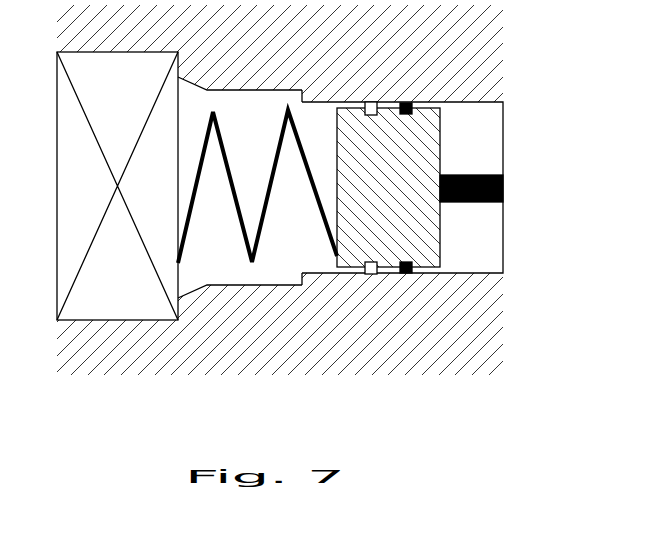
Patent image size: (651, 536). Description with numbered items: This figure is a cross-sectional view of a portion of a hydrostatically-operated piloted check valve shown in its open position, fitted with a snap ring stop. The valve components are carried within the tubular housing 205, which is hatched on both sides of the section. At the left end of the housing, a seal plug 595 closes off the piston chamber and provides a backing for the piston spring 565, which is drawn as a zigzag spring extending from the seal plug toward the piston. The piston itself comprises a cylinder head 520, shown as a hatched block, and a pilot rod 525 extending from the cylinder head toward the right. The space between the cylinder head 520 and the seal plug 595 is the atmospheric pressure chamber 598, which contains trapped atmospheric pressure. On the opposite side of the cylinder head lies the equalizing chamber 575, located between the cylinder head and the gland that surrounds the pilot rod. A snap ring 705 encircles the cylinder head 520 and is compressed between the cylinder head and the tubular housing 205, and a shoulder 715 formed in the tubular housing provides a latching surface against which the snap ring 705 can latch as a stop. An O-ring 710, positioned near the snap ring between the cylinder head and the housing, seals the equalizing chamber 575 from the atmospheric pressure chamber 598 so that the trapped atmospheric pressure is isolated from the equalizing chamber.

The tubular housing 205 is at (291, 45).
The seal plug 595 is at (147, 65).
The atmospheric pressure chamber 598 is at (206, 268).
The piston spring 565 is at (222, 127).
The shoulder 715 is at (300, 96).
The equalizing chamber 575 is at (477, 270).
The cylinder head 520 is at (411, 198).
The pilot rod 525 is at (487, 175).
The snap ring 705 is at (368, 100).
The O-ring 710 is at (406, 100).